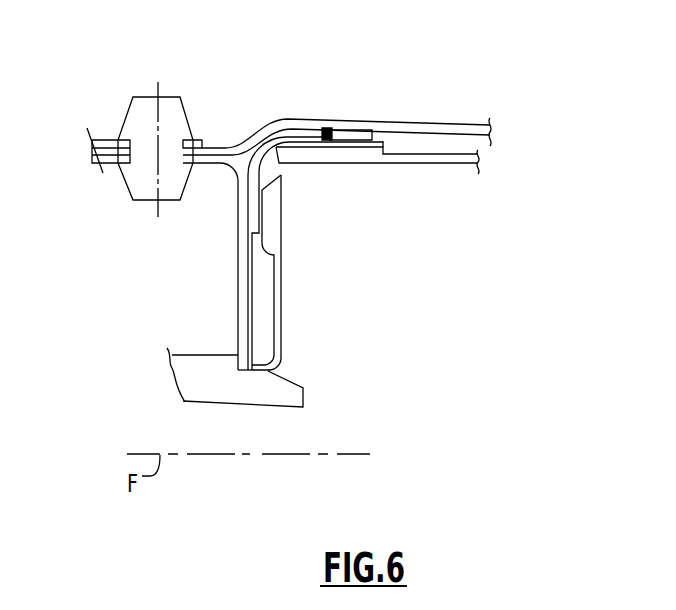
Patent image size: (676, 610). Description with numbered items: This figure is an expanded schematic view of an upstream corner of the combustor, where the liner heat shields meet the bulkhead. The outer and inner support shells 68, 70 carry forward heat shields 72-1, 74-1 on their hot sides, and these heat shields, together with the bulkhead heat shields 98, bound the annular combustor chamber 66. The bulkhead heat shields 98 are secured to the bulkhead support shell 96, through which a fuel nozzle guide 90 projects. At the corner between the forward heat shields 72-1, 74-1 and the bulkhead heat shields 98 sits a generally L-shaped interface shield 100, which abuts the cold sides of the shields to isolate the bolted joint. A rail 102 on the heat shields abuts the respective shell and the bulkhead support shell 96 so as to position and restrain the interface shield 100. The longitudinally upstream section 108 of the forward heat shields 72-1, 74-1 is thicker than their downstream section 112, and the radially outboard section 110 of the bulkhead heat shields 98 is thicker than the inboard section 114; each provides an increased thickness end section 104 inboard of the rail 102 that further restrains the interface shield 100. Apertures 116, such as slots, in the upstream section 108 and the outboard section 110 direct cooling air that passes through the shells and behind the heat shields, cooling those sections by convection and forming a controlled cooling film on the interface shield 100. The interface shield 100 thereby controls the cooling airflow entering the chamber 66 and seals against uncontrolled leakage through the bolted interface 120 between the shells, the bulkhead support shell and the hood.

The annular combustor chamber 66 is at (570, 316).
The outer support shell 68 is at (365, 112).
The inner support shell 70 is at (473, 122).
The forward heat shields 72-1 is at (487, 177).
The forward heat shields 74-1 is at (419, 166).
The fuel nozzle guide 90 is at (233, 378).
The bulkhead support shell 96 is at (245, 296).
The bulkhead heat shields 98 is at (284, 323).
The interface shield 100 is at (250, 176).
The rail 102 is at (380, 140).
The increased thickness end section 104 is at (345, 165).
The longitudinally upstream section 108 is at (326, 130).
The radially outboard section 110 is at (268, 233).
The downstream section 112 is at (465, 160).
The inboard section 114 is at (279, 350).
The apertures 116 is at (275, 188).
The bolted interface 120 is at (135, 115).